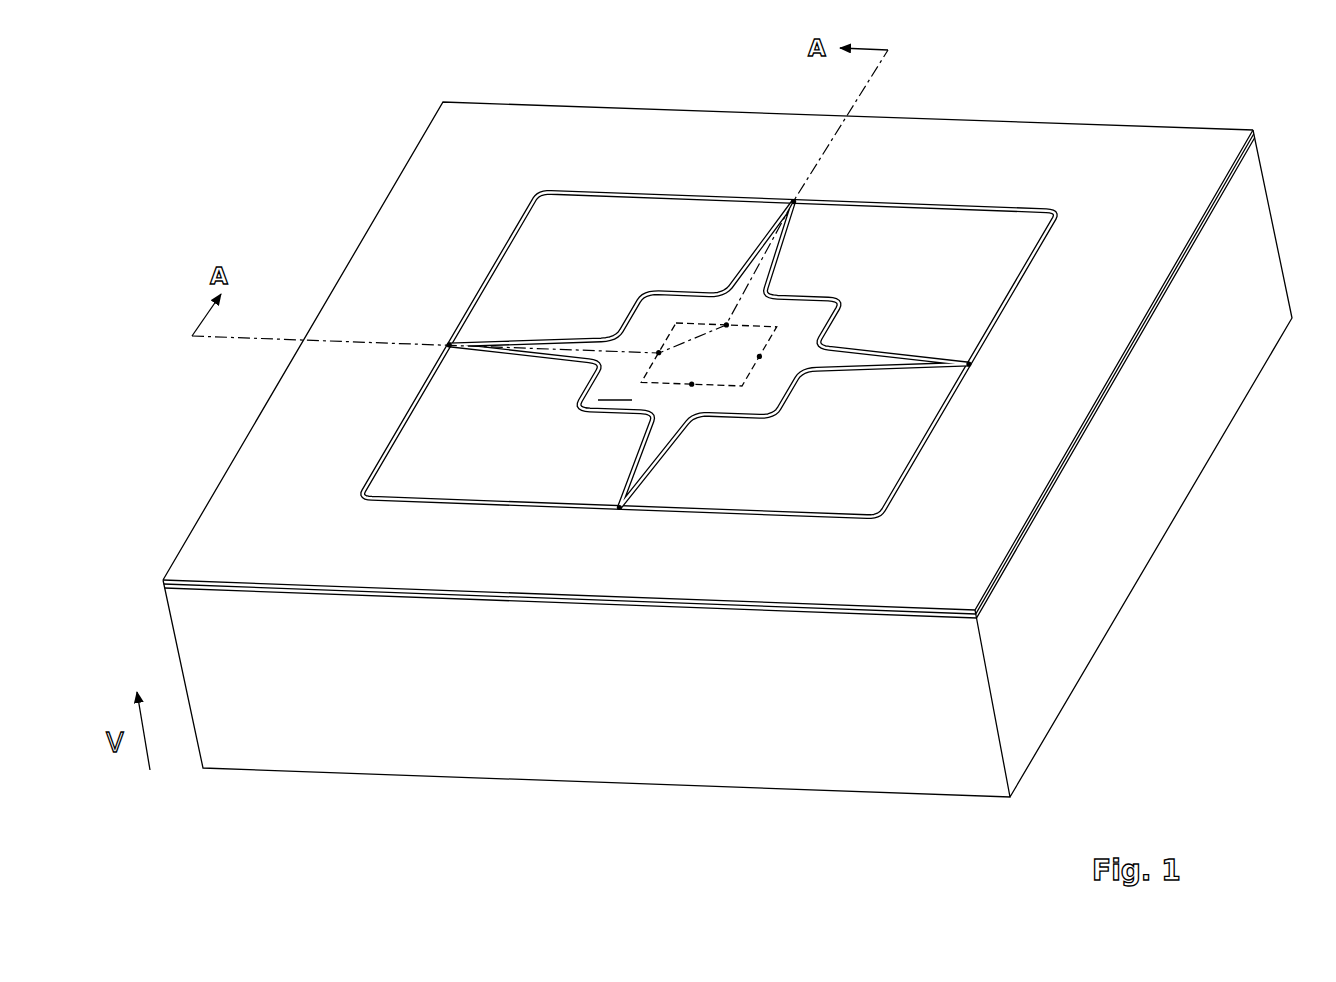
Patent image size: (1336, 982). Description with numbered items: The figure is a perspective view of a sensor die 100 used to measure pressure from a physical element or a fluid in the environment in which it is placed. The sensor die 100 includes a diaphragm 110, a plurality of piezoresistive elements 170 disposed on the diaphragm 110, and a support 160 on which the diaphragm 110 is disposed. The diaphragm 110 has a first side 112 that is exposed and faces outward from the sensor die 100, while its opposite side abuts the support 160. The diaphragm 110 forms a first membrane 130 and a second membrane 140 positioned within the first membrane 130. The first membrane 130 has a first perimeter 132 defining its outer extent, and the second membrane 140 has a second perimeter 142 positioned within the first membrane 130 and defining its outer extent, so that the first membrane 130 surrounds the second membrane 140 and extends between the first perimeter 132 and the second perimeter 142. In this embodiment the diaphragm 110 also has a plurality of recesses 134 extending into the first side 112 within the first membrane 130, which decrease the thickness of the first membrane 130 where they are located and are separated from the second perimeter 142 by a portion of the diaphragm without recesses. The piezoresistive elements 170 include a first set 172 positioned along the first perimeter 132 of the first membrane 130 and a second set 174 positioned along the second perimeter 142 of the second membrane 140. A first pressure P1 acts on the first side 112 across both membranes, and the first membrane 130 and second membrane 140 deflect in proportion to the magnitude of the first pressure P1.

The sensor die 100 is at (700, 428).
The diaphragm 110 is at (1173, 122).
The first side 112 is at (1043, 138).
The first membrane 130 is at (867, 360).
The first perimeter 132 is at (836, 516).
The recess 134 is at (543, 210).
The second membrane 140 is at (690, 338).
The second perimeter 142 is at (766, 322).
The support 160 is at (1283, 218).
The piezoresistive elements 170 is at (680, 357).
The first set of piezoresistive elements 172 is at (793, 201).
The second set of piezoresistive elements 174 is at (726, 322).
The first pressure P1 is at (615, 387).